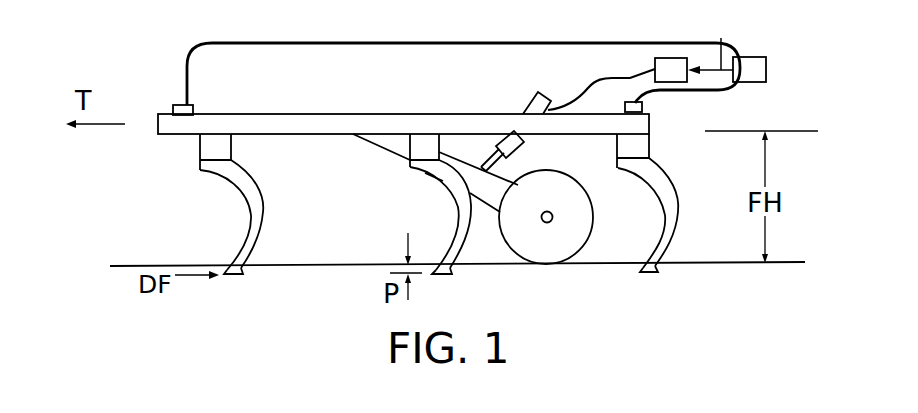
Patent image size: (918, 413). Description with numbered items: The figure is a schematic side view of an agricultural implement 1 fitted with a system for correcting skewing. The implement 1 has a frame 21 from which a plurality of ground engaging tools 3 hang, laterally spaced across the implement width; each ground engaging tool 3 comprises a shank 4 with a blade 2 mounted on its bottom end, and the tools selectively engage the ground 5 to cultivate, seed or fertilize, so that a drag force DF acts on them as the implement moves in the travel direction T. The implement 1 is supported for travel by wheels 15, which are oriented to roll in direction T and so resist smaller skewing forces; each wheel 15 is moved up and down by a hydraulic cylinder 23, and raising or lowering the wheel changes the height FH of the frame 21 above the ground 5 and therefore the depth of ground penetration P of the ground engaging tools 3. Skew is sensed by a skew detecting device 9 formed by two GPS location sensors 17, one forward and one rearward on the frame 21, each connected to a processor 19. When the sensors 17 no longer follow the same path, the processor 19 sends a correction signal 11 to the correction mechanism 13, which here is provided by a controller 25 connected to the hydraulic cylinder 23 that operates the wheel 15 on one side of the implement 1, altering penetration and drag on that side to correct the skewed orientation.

The agricultural implement 1 is at (403, 93).
The blade 2 is at (641, 272).
The ground engaging tool 3 is at (678, 198).
The shank 4 is at (658, 236).
The ground 5 is at (693, 258).
The skew detecting device 9 is at (693, 59).
The correction signal 11 is at (721, 38).
The correction mechanism 13 is at (596, 55).
The wheel 15 is at (597, 209).
The GPS location sensor 17 is at (180, 105).
The processor 19 is at (767, 67).
The frame 21 is at (287, 113).
The hydraulic cylinder 23 is at (521, 101).
The controller 25 is at (672, 58).